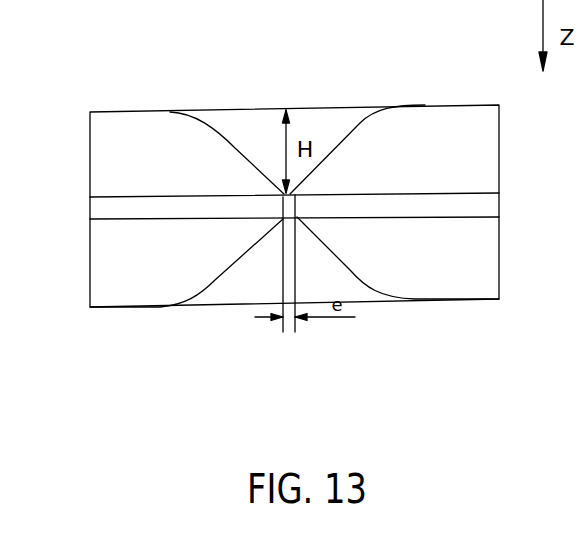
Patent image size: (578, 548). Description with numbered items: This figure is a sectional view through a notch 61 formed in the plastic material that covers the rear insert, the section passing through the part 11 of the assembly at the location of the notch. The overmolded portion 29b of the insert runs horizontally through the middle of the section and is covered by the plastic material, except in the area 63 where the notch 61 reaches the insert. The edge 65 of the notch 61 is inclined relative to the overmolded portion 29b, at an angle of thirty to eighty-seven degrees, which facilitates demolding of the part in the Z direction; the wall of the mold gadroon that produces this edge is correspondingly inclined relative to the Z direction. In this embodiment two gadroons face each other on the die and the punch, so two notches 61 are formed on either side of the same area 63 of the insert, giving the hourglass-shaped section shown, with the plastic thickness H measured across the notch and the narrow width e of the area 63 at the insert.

The substrate body 11 is at (120, 140).
The overmolded portion 29b is at (433, 217).
The notch 61 is at (246, 89).
The area 63 is at (297, 220).
The edge 65 is at (337, 147).